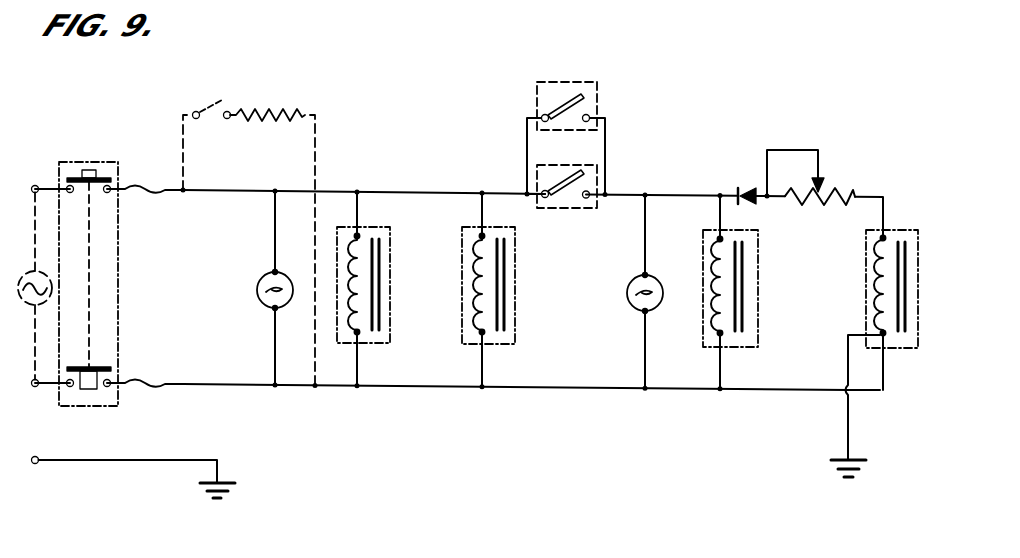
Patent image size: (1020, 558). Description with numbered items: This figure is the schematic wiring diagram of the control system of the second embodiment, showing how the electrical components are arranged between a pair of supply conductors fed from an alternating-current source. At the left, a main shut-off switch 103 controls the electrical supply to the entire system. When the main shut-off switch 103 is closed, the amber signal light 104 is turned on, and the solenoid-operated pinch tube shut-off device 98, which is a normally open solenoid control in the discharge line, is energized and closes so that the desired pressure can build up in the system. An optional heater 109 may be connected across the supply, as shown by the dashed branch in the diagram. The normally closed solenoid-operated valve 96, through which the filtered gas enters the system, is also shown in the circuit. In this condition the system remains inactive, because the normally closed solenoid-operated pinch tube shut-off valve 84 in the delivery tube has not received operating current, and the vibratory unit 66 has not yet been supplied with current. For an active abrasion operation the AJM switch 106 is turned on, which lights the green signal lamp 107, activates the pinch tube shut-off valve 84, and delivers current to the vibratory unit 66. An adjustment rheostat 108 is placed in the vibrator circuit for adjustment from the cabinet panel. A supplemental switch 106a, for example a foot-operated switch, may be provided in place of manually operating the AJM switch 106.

The main shut-off switch 103 is at (95, 410).
The amber signal light 104 is at (258, 298).
The heater 109 is at (322, 90).
The normally closed solenoid-operated valve 96 is at (430, 326).
The solenoid-operated pinch tube shut-off device 98 is at (462, 240).
The AJM switch 106 is at (612, 218).
The supplemental switch 106a is at (600, 90).
The green signal lamp 107 is at (640, 314).
The pinch tube shut-off valve 84 is at (703, 240).
The adjustment rheostat 108 is at (837, 143).
The vibratory unit 66 is at (866, 240).